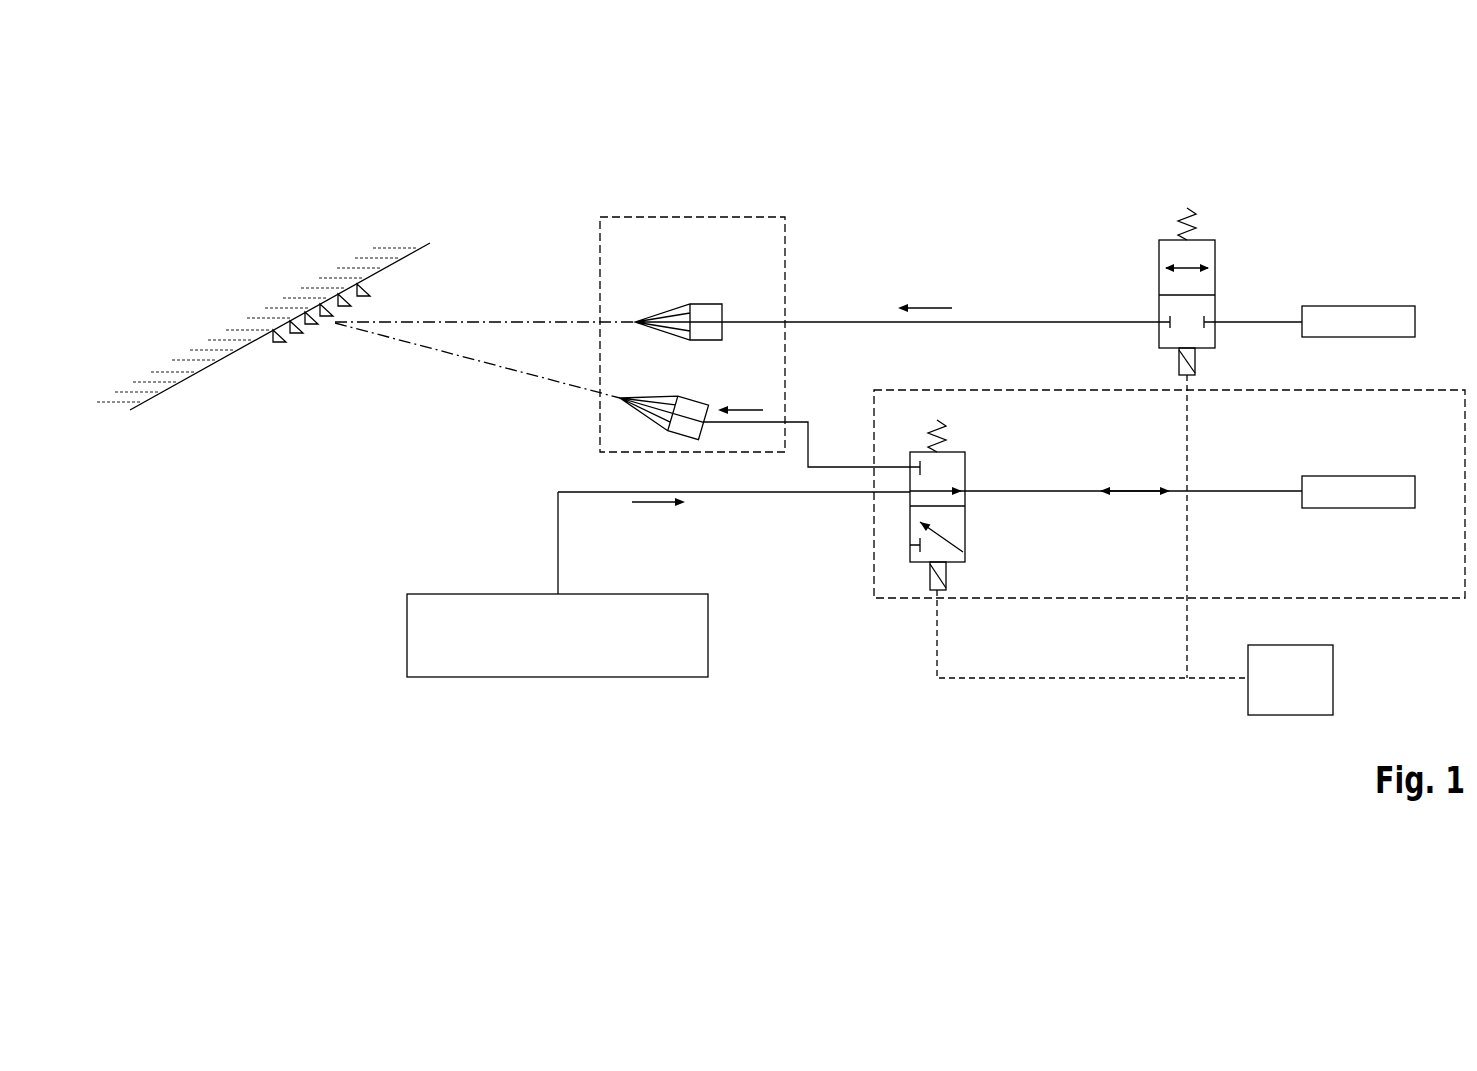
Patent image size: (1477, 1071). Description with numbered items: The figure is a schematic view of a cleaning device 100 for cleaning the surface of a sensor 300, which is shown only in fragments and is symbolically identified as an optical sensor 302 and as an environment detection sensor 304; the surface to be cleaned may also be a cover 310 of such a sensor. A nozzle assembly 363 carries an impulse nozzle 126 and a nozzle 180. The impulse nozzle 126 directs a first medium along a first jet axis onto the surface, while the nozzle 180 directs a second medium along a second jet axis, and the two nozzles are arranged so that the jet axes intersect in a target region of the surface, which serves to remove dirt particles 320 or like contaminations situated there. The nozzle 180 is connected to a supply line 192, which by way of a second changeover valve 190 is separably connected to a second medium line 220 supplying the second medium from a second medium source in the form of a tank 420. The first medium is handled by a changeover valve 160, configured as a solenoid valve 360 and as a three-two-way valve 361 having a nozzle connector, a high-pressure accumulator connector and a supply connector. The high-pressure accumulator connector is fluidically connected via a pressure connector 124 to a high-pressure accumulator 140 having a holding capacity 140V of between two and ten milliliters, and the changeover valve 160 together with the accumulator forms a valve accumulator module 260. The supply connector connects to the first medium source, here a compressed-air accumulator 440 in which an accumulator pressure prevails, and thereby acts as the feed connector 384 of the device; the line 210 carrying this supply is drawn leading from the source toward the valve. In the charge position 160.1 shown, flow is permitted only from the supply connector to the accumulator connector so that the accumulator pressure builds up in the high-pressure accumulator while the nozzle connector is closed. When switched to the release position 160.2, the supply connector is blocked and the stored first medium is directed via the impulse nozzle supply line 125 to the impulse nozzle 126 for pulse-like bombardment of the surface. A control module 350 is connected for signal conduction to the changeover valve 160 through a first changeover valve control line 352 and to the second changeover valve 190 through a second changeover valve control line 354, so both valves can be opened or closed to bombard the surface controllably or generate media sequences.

The cleaning device 100 is at (1097, 75).
The sensor 300 is at (263, 310).
The optical sensor 302 is at (263, 310).
The environment detection sensor 304 is at (268, 182).
The cover 310 is at (270, 300).
The dirt particles 320 is at (276, 352).
The nozzle assembly 363 is at (742, 217).
The nozzle 180 is at (703, 303).
The impulse nozzle 126 is at (645, 422).
The impulse nozzle supply line 125 is at (838, 467).
The supply line 192 is at (1013, 321).
The second changeover valve 190 is at (1210, 222).
The second medium line 220 is at (1257, 321).
The tank 420 is at (1357, 279).
The high-pressure accumulator 140 is at (1363, 453).
The holding capacity 140V is at (1352, 476).
The pressure connector 124 is at (1258, 492).
The changeover valve 160 is at (1045, 509).
The solenoid valve 360 is at (1045, 509).
The 3/2-way valve 361 is at (975, 525).
The charge position 160.1 is at (965, 466).
The release position 160.2 is at (965, 552).
The feed connector 384 is at (734, 510).
The line from first medium source 210 is at (558, 540).
The compressed-air accumulator 440 is at (557, 676).
The valve accumulator module 260 is at (1440, 598).
The first changeover valve control line 352 is at (937, 640).
The second changeover valve control line 354 is at (1187, 640).
The control module 350 is at (1295, 715).